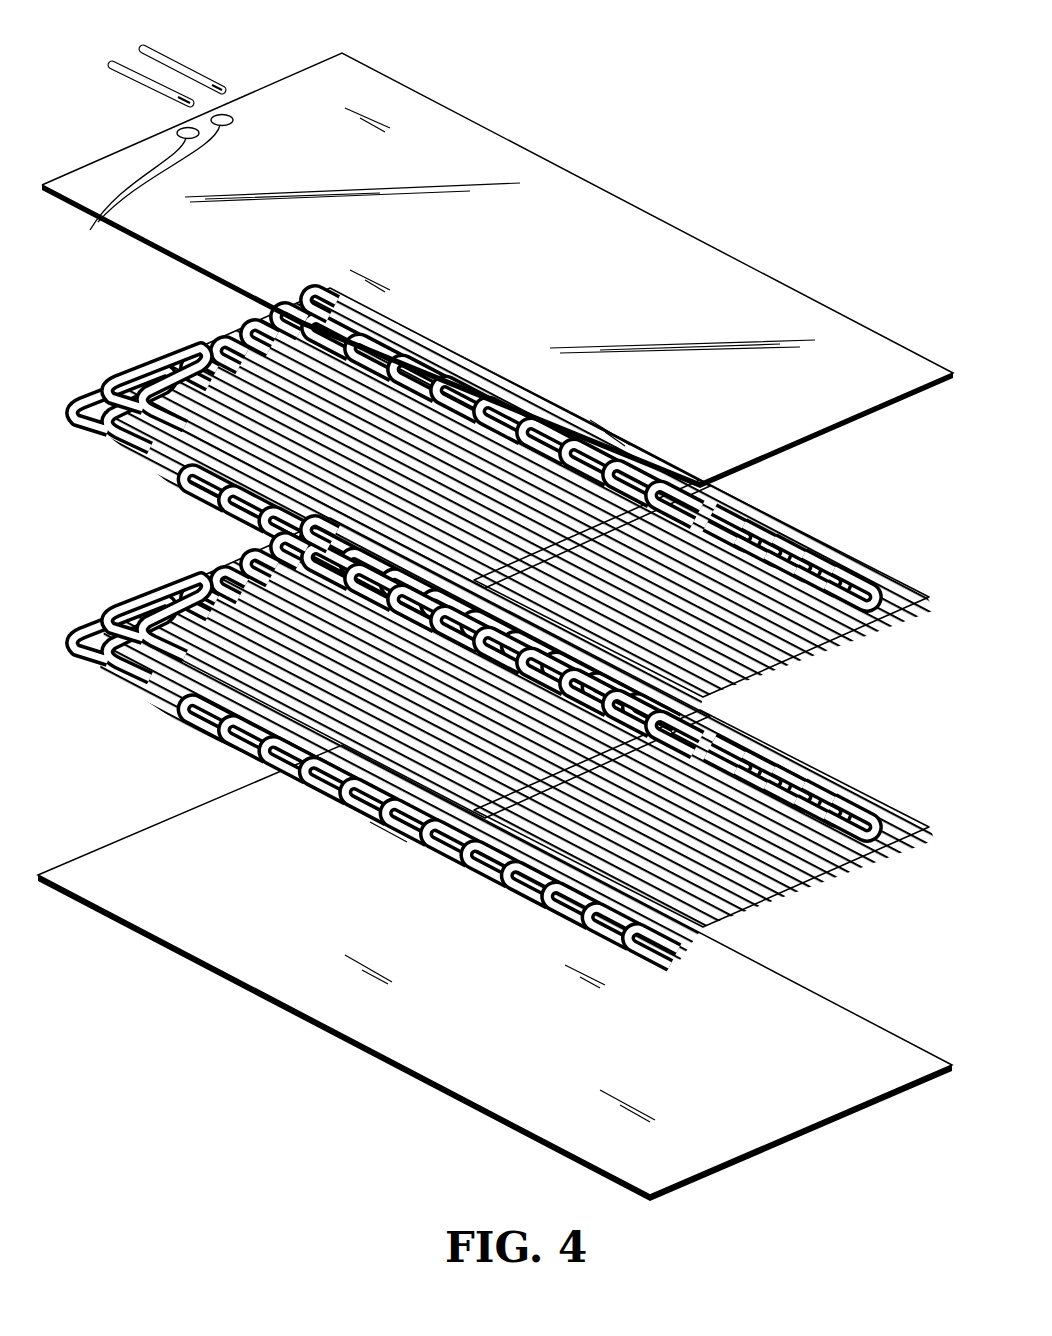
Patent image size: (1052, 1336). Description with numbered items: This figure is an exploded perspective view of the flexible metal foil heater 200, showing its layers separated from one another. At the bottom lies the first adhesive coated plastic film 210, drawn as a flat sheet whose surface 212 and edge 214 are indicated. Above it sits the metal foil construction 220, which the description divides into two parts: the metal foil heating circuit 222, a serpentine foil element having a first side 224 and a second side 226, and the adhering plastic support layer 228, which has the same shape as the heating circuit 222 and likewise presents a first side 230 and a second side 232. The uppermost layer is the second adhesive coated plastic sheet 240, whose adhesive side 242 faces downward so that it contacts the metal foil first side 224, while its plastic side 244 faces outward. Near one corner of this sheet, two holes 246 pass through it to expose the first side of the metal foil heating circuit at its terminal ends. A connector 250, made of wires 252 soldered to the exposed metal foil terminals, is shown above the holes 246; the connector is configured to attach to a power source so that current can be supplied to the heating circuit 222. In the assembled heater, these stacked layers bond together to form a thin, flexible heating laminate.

The flexible metal foil heater 200 is at (722, 134).
The first adhesive coated plastic film 210 is at (122, 920).
The top surface of bottom plate 212 is at (195, 938).
The edge of bottom plate 214 is at (240, 988).
The metal foil construction 220 is at (105, 592).
The metal foil heating circuit 222 is at (103, 382).
The first side of metal foil heating circuit 224 is at (134, 376).
The second side of metal foil heating circuit 226 is at (222, 498).
The adhering plastic support layer 228 is at (76, 650).
The first side of adhering plastic support layer 230 is at (100, 622).
The second side of adhering plastic support layer 232 is at (136, 682).
The second adhesive coated plastic sheet 240 is at (348, 52).
The adhesive side 242 is at (182, 262).
The plastic side 244 is at (398, 117).
The holes 246 is at (99, 227).
The connector 250 is at (224, 68).
The wires 252 is at (178, 86).